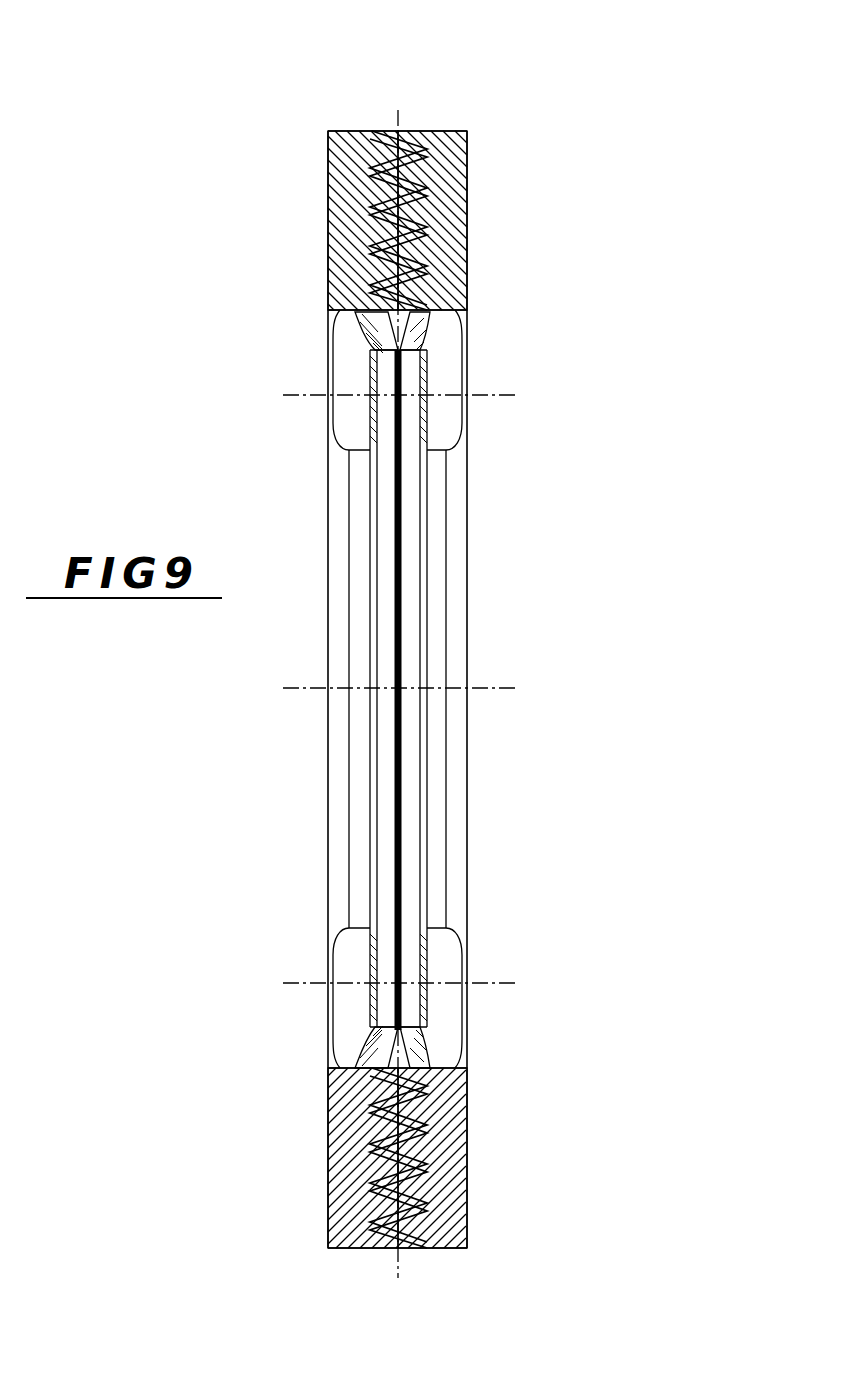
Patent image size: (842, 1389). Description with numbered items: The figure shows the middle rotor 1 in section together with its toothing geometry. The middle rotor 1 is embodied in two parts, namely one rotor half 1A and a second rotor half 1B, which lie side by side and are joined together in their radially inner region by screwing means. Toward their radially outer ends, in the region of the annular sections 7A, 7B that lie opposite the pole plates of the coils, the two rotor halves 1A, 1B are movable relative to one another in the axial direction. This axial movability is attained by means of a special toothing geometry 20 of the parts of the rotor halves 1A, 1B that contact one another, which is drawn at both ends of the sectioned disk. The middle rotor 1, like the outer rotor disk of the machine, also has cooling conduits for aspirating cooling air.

The middle rotor 1 is at (467, 131).
The rotor half 1A is at (352, 247).
The second rotor half 1B is at (450, 248).
The annular section 7A is at (337, 1205).
The annular section 7B is at (453, 1205).
The toothing geometry 20 is at (420, 147).